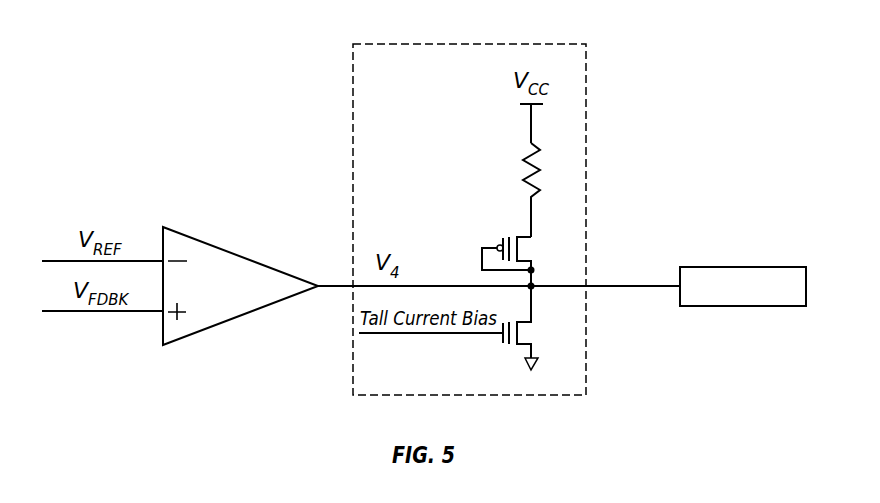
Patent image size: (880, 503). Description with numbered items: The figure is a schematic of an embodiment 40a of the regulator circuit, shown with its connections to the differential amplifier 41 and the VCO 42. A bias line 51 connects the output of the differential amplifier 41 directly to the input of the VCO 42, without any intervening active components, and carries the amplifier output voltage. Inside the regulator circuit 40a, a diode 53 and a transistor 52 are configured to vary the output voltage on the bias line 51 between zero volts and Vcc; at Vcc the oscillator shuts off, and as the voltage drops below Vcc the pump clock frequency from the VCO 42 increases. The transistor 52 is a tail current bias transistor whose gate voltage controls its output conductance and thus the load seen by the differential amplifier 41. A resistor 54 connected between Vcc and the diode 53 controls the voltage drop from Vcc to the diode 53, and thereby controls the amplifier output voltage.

The regulator circuit embodiment 40a is at (403, 43).
The differential amplifier 41 is at (190, 233).
The VCO 42 is at (763, 306).
The bias line 51 is at (607, 286).
The transistor 52 is at (510, 348).
The diode 53 is at (510, 235).
The resistor 54 is at (525, 145).